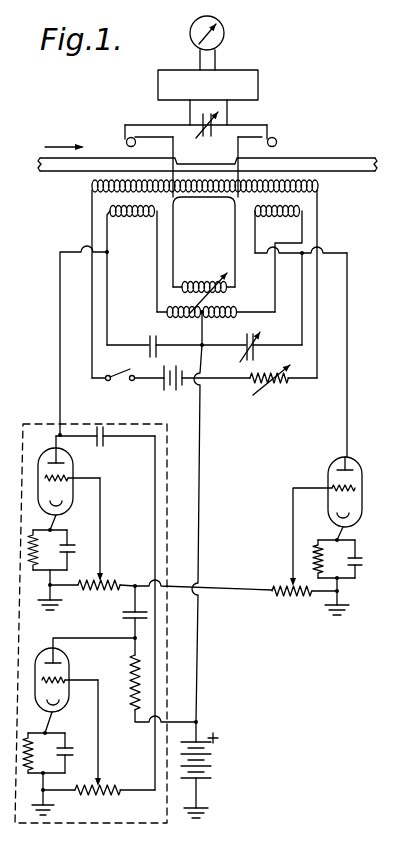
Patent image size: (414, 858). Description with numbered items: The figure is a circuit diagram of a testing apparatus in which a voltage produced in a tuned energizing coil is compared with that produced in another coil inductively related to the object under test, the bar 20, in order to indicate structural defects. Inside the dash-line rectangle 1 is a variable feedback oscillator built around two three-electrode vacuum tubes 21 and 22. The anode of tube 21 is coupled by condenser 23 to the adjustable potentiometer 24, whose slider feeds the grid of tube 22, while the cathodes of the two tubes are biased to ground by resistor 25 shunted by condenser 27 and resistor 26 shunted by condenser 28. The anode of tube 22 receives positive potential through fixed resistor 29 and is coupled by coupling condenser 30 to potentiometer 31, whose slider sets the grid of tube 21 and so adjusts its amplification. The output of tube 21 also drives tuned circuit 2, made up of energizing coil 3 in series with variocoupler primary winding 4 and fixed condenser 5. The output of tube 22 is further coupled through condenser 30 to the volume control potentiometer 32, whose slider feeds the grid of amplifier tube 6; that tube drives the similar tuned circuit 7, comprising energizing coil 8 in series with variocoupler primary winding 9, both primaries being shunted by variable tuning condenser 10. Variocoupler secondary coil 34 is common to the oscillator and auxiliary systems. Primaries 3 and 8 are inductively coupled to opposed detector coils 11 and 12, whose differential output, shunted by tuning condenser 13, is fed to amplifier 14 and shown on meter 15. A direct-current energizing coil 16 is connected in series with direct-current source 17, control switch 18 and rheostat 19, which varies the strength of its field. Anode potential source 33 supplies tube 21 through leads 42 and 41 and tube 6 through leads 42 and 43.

The oscillator 1 is at (168, 562).
The tuned circuit 2 is at (131, 278).
The energizing coil 3 is at (140, 216).
The variocoupler primary winding 4 is at (186, 318).
The fixed condenser 5 is at (146, 336).
The amplifier tube 6 is at (328, 470).
The tuned circuit 7 is at (301, 278).
The energizing coil 8 is at (258, 218).
The variocoupler primary winding 9 is at (237, 324).
The variable tuning condenser 10 is at (262, 343).
The detector coil 11 is at (124, 138).
The auxiliary detector coil 12 is at (278, 141).
The tuning condenser 13 is at (196, 135).
The amplifier 14 is at (258, 79).
The meter 15 is at (225, 33).
The direct-current energizing coil 16 is at (209, 196).
The source of direct current 17 is at (172, 392).
The control switch 18 is at (128, 390).
The rheostat 19 is at (272, 388).
The bar 20 is at (70, 170).
The vacuum tube 21 is at (80, 465).
The vacuum tube 22 is at (69, 666).
The condenser 23 is at (105, 608).
The adjustable potentiometer 24 is at (99, 755).
The resistor 25 is at (29, 549).
The resistor 26 is at (44, 752).
The condenser 27 is at (76, 548).
The condenser 28 is at (73, 746).
The fixed resistor 29 is at (128, 677).
The coupling condenser 30 is at (122, 615).
The potentiometer 31 is at (161, 534).
The volume control potentiometer 32 is at (293, 600).
The anode potential source 33 is at (214, 756).
The variocoupler secondary coil 34 is at (204, 245).
The lead 41 is at (57, 366).
The lead 42 is at (206, 451).
The lead 43 is at (352, 378).